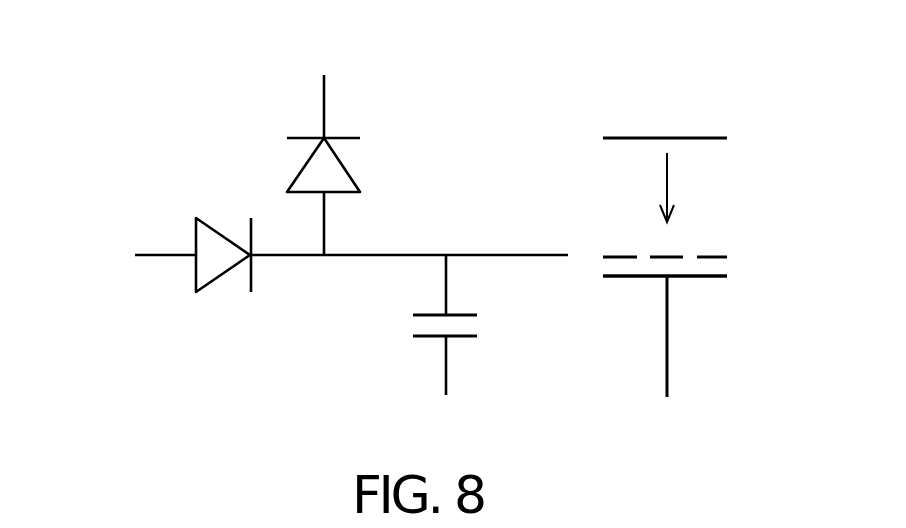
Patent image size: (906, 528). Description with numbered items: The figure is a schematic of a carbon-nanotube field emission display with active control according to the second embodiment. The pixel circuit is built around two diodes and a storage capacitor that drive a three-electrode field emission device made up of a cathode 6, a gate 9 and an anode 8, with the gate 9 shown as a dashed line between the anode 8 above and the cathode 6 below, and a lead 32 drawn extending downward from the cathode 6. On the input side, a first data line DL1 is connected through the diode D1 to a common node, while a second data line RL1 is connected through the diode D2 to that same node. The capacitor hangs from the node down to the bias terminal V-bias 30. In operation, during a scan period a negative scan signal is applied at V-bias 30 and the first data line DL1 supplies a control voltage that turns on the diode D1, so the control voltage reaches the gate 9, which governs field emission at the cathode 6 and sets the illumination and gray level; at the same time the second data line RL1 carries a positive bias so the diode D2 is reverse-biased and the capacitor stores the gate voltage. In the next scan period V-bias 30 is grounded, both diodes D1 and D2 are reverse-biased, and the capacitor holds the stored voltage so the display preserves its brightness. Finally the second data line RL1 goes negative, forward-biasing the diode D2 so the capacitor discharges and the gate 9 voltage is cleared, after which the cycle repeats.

The first data line DL1 is at (129, 249).
The second data line RL1 is at (327, 86).
The diode D1 is at (223, 273).
The diode D2 is at (350, 165).
The V-bias 30 is at (447, 376).
The anode 8 is at (727, 138).
The gate 9 is at (727, 257).
The cathode 6 is at (727, 276).
The connection line 32 is at (668, 337).